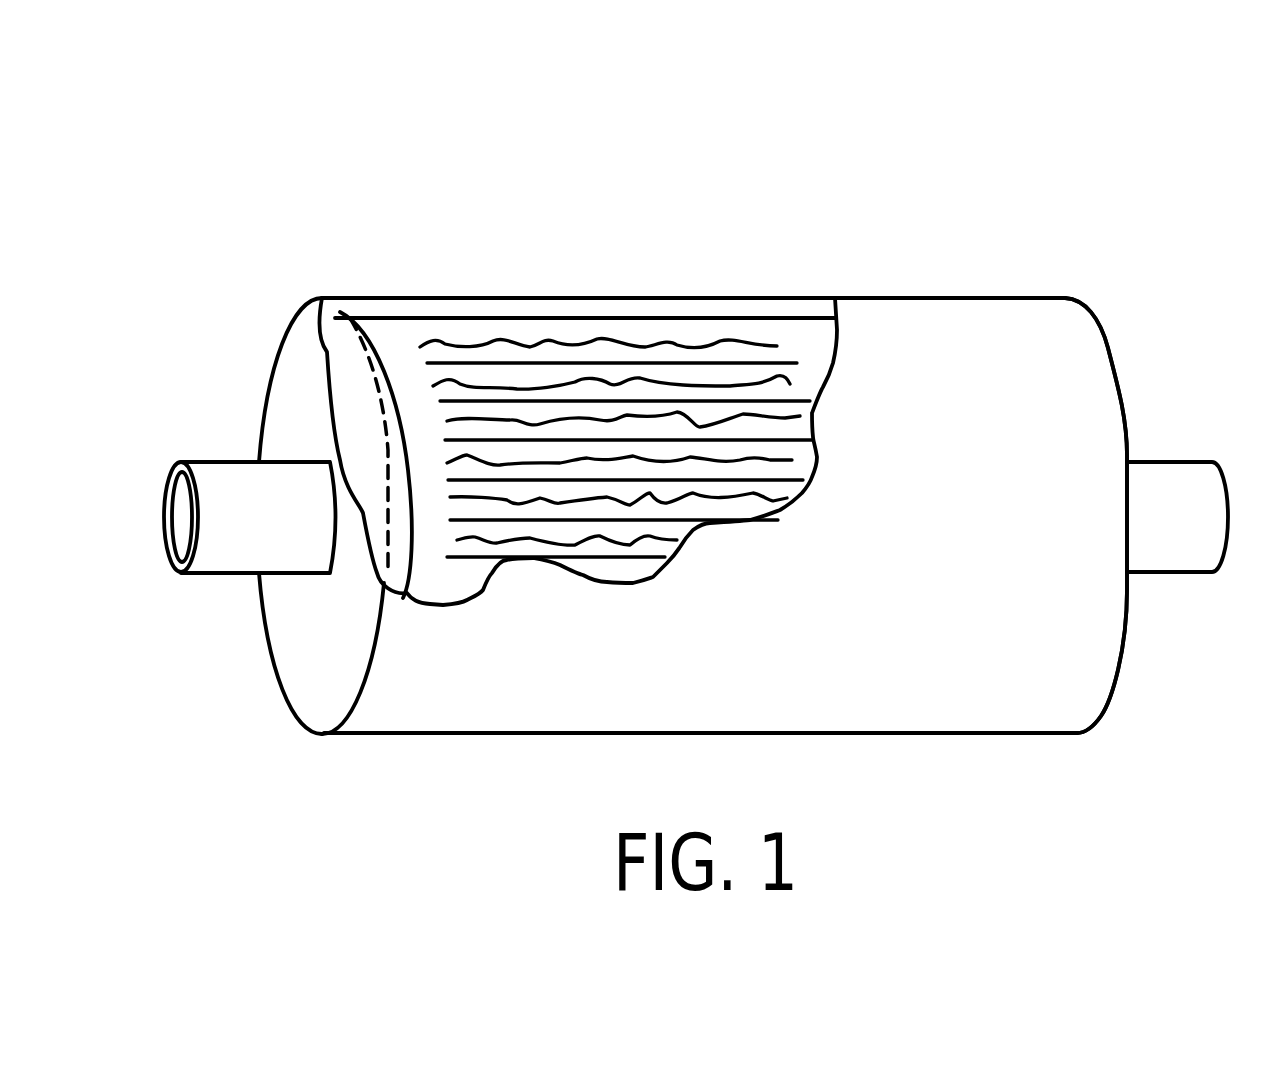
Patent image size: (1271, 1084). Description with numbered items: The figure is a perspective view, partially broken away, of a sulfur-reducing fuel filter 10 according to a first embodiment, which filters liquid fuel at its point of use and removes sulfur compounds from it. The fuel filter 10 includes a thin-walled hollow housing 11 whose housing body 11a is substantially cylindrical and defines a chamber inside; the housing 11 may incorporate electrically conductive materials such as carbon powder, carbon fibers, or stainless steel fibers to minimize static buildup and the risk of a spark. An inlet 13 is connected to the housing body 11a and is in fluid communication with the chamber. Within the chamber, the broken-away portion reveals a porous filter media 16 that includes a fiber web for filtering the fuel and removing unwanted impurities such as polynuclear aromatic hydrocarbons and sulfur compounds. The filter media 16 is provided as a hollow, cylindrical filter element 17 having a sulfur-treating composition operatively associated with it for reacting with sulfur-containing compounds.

The fuel filter 10 is at (880, 135).
The housing 11 is at (937, 620).
The housing body 11a is at (1093, 660).
The inlet 13 is at (220, 473).
The filter media 16 is at (790, 355).
The filter element 17 is at (398, 332).